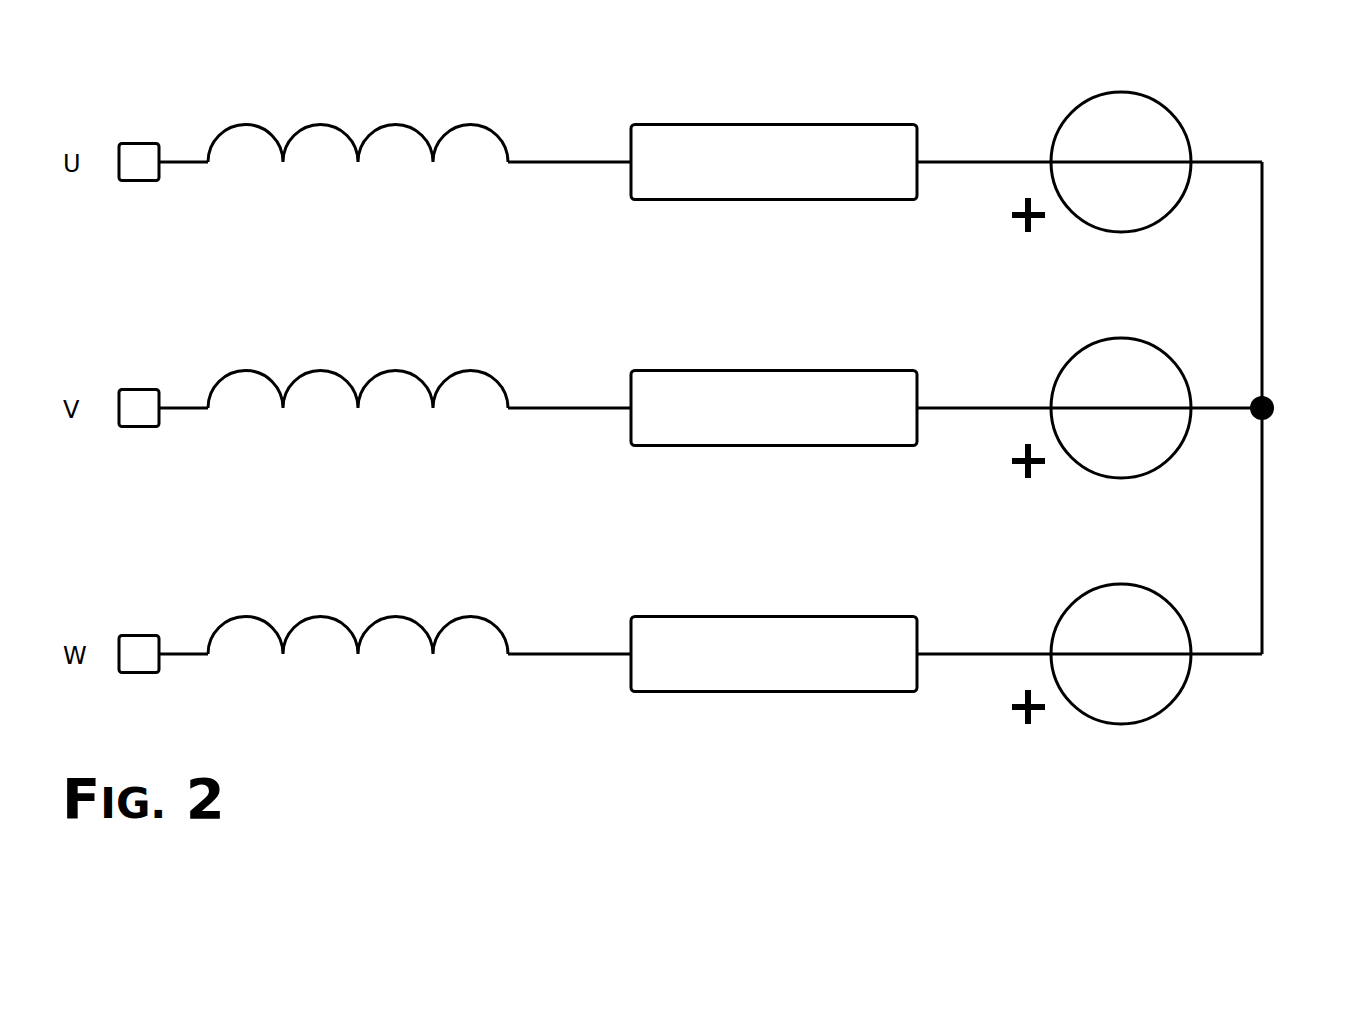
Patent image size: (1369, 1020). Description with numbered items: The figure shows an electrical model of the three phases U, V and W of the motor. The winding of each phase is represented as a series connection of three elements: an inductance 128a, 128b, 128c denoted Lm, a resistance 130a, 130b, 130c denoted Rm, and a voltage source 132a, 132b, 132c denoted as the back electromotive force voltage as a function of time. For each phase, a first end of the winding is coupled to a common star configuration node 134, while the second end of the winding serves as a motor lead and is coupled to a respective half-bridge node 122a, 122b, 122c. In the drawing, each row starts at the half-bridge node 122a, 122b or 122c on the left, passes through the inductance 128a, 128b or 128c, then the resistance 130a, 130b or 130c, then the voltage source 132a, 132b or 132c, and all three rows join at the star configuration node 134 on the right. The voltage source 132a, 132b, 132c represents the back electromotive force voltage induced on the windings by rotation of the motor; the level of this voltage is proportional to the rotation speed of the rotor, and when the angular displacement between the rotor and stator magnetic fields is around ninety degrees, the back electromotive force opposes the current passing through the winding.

The half-bridge node 122a is at (130, 144).
The inductance 128a is at (477, 125).
The resistance 130a is at (878, 124).
The voltage source 132a is at (1177, 118).
The half-bridge node 122b is at (130, 390).
The inductance 128b is at (477, 371).
The resistance 130b is at (878, 370).
The voltage source 132b is at (1057, 380).
The half-bridge node 122c is at (130, 636).
The inductance 128c is at (477, 617).
The resistance 130c is at (878, 616).
The voltage source 132c is at (1178, 695).
The star configuration node 134 is at (1273, 400).